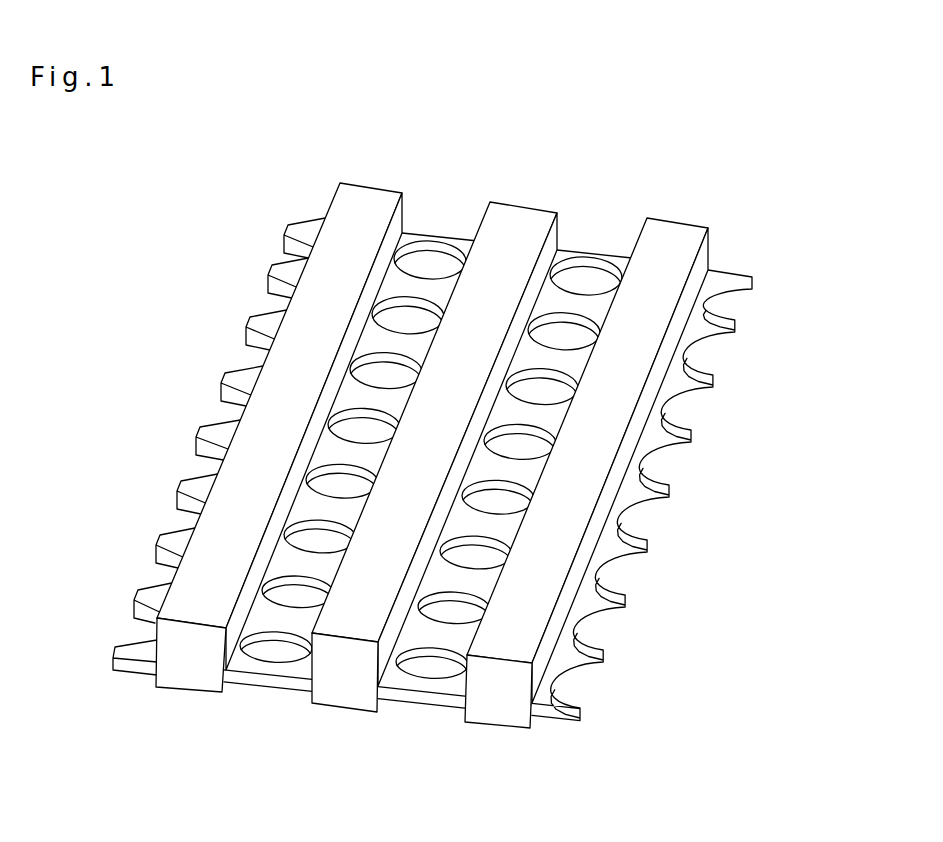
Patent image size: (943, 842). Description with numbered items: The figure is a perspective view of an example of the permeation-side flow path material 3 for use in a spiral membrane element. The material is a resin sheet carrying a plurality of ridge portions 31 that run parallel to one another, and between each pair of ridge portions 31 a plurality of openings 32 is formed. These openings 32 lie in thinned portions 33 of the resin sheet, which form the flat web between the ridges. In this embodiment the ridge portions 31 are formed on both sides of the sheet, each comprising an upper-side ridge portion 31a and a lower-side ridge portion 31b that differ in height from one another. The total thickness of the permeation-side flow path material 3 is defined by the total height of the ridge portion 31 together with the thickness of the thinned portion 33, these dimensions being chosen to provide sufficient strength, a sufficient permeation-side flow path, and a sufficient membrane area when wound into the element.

The permeation-side flow path material 3 is at (743, 438).
The ridge portions 31 is at (537, 178).
The upper-side ridge portion 31a is at (473, 680).
The lower-side ridge portion 31b is at (492, 717).
The openings 32 is at (570, 334).
The thinned portions 33 is at (277, 682).